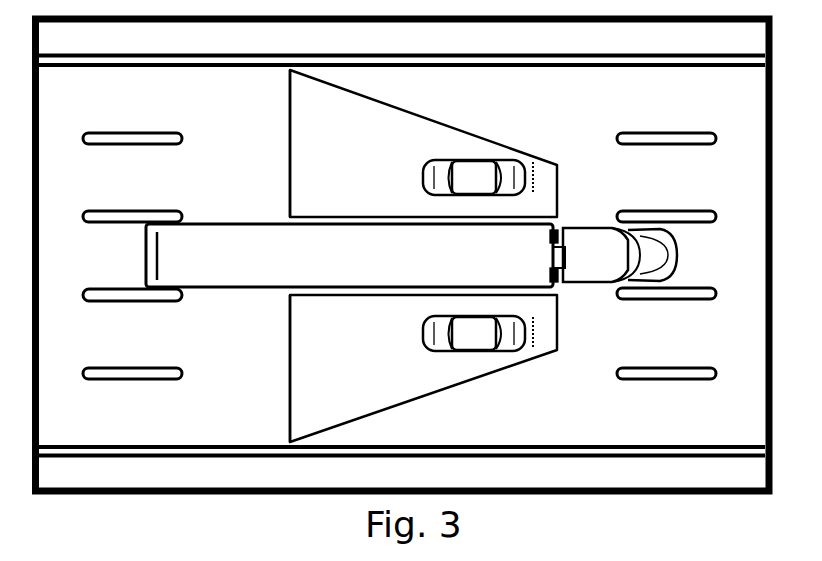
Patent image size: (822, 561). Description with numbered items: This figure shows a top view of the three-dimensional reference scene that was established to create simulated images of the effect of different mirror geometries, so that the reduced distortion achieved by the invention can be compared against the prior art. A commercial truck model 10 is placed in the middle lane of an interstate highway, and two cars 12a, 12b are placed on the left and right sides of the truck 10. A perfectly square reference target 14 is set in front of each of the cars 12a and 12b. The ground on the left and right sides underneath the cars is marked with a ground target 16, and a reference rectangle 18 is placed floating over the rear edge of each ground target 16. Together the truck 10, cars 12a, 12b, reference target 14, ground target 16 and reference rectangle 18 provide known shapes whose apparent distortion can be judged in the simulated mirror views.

The commercial truck model 10 is at (583, 243).
The car 12a is at (425, 328).
The car 12b is at (425, 158).
The reference target 14 is at (538, 183).
The ground target 16 is at (315, 97).
The reference rectangle 18 is at (288, 140).